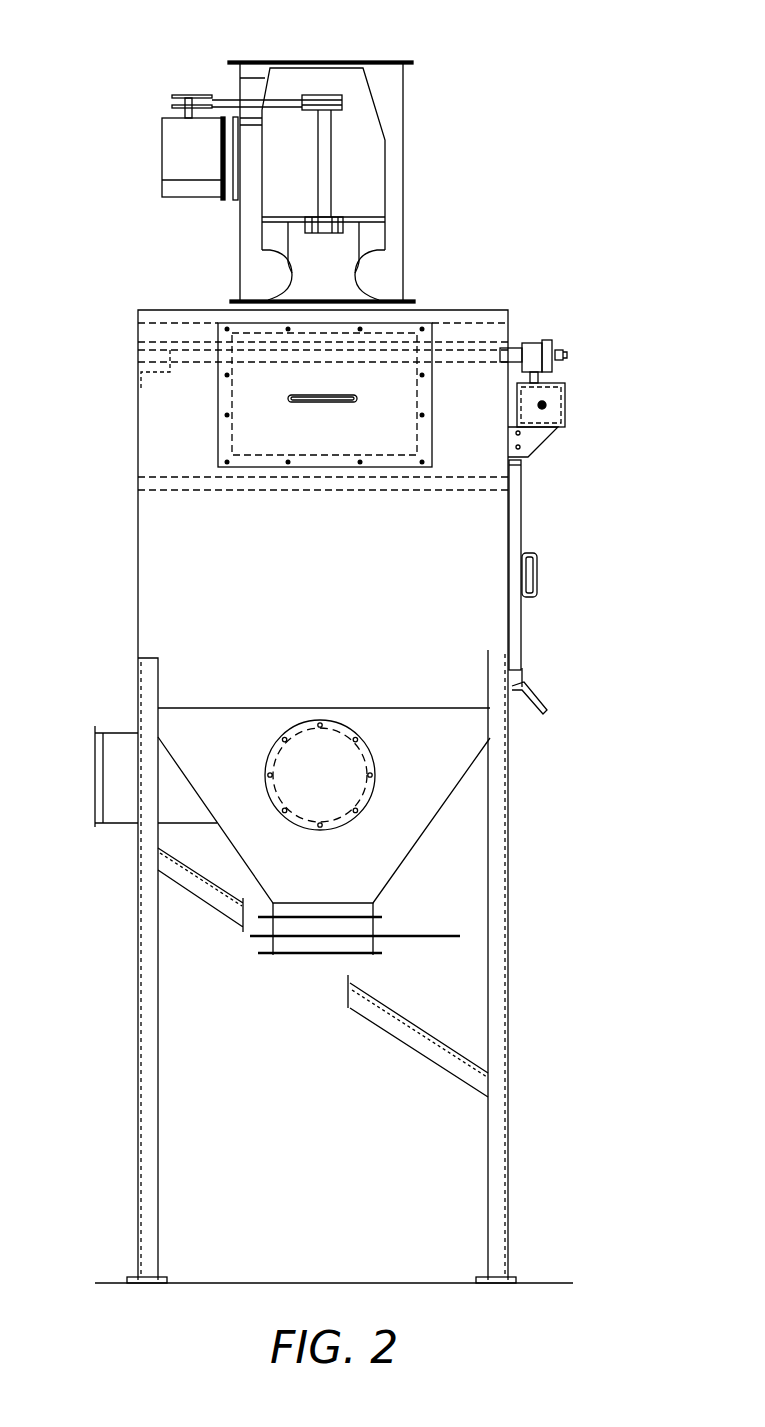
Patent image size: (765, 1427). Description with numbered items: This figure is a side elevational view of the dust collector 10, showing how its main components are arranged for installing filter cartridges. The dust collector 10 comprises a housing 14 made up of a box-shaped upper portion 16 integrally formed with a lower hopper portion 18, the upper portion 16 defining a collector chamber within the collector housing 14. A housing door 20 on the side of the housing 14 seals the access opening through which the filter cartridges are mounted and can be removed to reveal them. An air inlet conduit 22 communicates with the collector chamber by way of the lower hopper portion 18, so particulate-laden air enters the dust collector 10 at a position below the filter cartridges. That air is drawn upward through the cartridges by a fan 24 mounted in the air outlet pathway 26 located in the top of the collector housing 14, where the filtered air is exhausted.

The dust collector 10 is at (98, 559).
The housing 14 is at (137, 633).
The upper portion 16 is at (470, 630).
The lower hopper portion 18 is at (380, 853).
The housing door 20 is at (515, 515).
The air inlet conduit 22 is at (117, 812).
The fan 24 is at (373, 178).
The air outlet pathway 26 is at (320, 62).